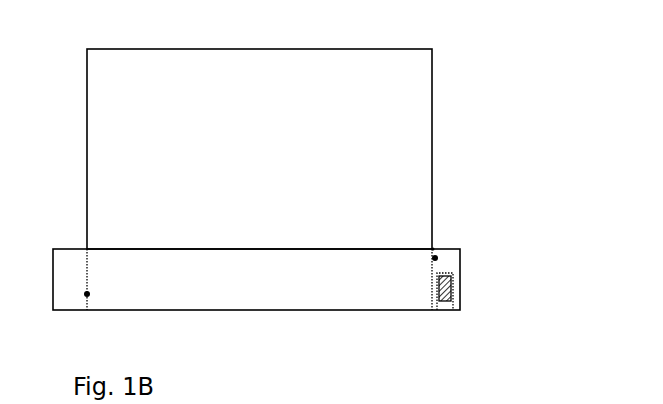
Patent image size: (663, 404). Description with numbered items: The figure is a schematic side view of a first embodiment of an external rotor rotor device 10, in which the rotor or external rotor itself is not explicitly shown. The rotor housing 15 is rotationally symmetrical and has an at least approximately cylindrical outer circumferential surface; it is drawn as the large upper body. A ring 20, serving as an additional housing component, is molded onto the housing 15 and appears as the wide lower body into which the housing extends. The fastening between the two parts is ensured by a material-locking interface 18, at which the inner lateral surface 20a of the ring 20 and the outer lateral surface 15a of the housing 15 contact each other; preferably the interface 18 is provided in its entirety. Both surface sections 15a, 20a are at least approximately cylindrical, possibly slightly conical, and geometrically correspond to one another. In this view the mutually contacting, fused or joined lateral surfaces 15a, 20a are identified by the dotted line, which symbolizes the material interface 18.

The external rotor rotor device 10 is at (464, 69).
The rotor housing 15 is at (384, 93).
The outer lateral surface of the housing 15a is at (437, 257).
The material-locking interface 18 is at (438, 245).
The ring 20 is at (363, 300).
The inner lateral surface of the ring 20a is at (88, 294).